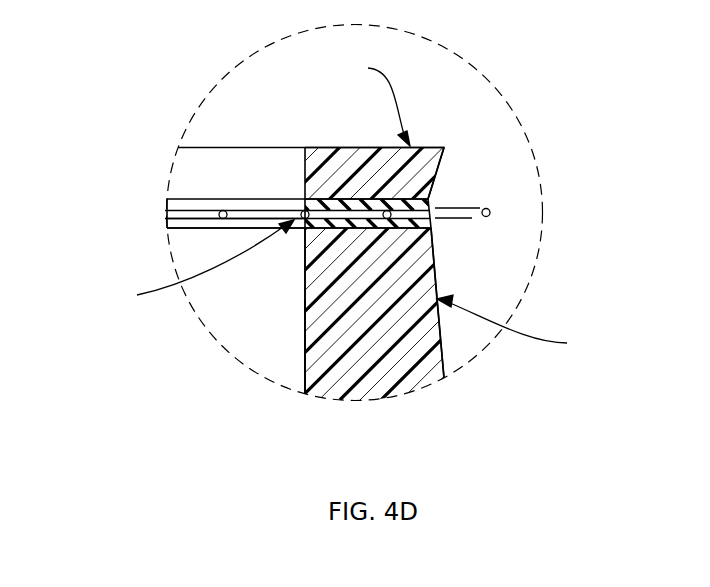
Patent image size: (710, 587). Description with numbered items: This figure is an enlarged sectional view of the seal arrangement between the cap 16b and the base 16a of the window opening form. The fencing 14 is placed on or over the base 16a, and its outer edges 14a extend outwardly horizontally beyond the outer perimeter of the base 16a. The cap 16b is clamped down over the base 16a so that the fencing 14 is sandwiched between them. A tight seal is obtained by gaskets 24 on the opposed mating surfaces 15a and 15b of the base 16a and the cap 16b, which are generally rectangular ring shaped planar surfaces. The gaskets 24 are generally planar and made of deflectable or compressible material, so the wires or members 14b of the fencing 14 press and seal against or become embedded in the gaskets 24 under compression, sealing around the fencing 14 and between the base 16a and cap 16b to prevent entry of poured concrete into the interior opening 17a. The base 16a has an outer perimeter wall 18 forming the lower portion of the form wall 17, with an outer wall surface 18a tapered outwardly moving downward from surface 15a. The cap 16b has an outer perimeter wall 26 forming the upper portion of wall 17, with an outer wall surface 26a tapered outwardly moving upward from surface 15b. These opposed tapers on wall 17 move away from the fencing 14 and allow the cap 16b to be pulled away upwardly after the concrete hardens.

The fencing 14 is at (210, 212).
The outer edges of the fencing 14a is at (473, 207).
The wires or members of the fencing 14b is at (210, 220).
The mating surface of the base 15a is at (335, 229).
The mating surface of the cap 15b is at (330, 197).
The base 16a is at (443, 340).
The cap 16b is at (313, 147).
The wall of window opening form 17 is at (370, 388).
The opening or interior area 17a is at (238, 302).
The outer perimeter ring or wall of the base 18 is at (420, 383).
The outer wall surface of the base wall 18a is at (433, 263).
The gaskets 24 is at (432, 205).
The outer perimeter ring or wall of the cap 26 is at (435, 147).
The outer wall surface of the cap wall 26a is at (443, 163).